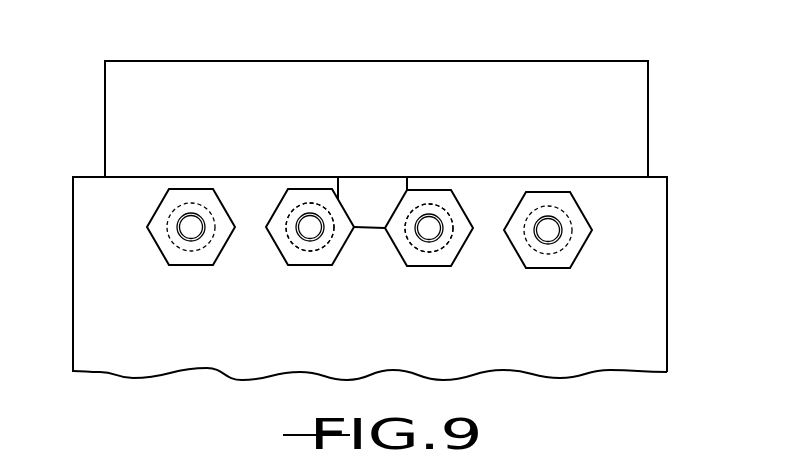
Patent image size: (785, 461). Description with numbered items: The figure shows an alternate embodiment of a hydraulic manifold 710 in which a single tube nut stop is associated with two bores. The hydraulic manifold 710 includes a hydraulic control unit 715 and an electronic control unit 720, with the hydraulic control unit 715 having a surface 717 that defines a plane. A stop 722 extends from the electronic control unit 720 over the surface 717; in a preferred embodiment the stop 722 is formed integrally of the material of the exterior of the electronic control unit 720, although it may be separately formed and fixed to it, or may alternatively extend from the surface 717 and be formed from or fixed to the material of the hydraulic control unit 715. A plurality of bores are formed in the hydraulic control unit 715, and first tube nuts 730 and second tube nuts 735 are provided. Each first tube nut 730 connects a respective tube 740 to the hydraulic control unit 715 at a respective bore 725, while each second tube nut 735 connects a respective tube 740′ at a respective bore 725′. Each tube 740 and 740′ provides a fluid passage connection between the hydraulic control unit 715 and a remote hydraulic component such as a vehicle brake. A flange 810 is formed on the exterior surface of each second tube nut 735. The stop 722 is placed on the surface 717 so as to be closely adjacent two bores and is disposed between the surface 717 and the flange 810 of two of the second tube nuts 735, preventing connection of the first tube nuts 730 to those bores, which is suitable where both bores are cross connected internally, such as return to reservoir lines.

The hydraulic manifold 710 is at (666, 125).
The hydraulic control unit 715 is at (73, 255).
The surface 717 is at (625, 284).
The electronic control unit 720 is at (105, 122).
The stop 722 is at (370, 196).
The bore 725 is at (192, 252).
The bore 725′ is at (307, 250).
The first tube nut 730 is at (163, 229).
The second tube nut 735 is at (278, 218).
The tube 740 is at (191, 225).
The tube 740′ is at (312, 226).
The flange 810 is at (300, 196).